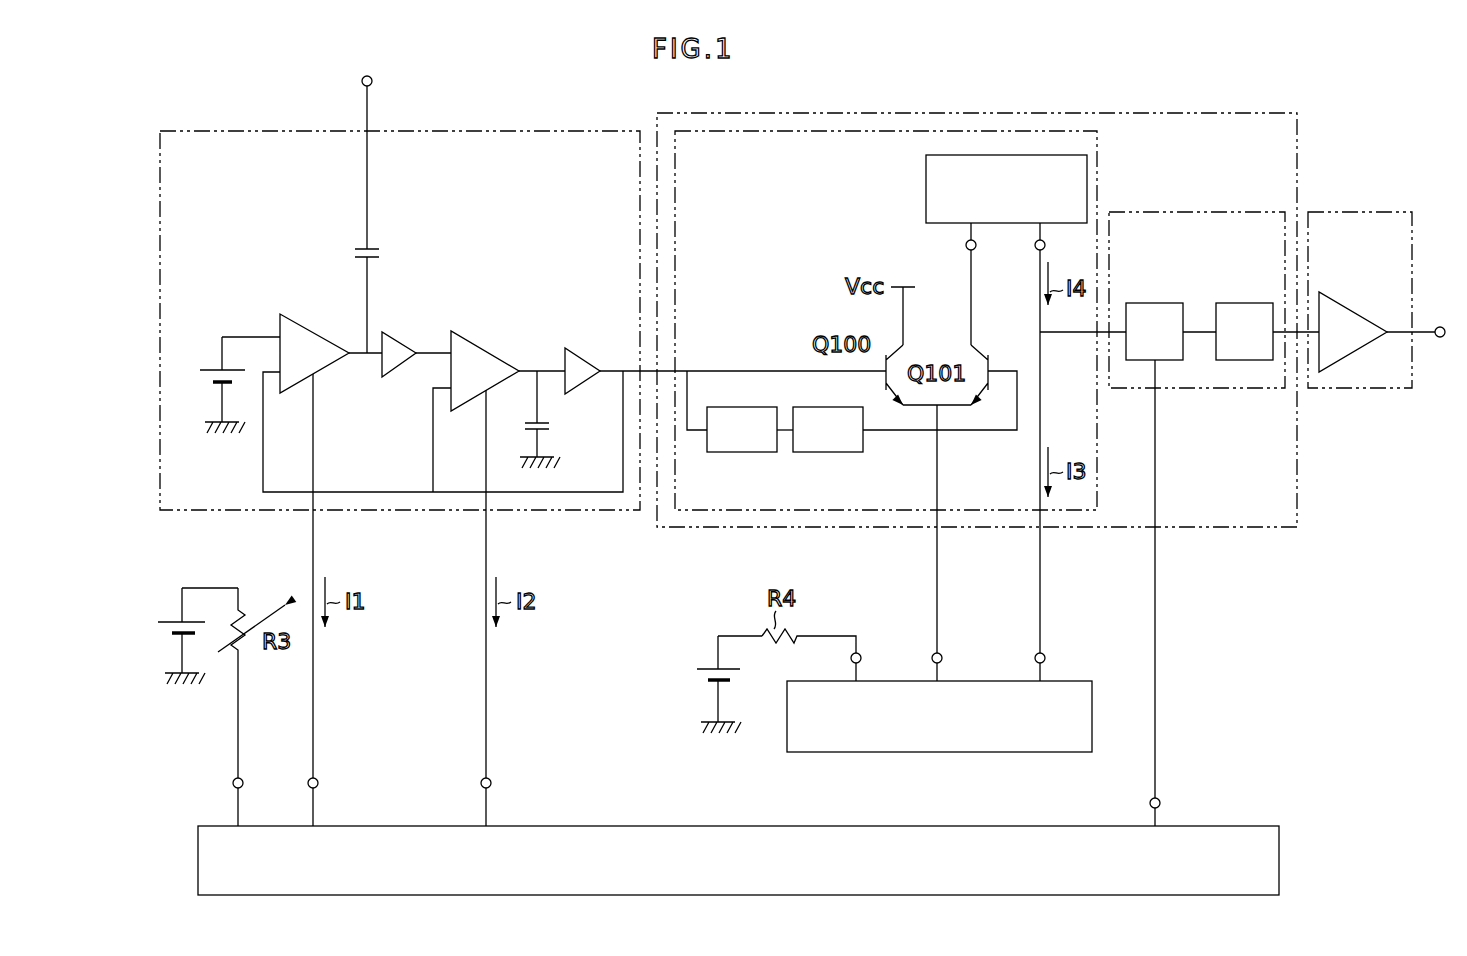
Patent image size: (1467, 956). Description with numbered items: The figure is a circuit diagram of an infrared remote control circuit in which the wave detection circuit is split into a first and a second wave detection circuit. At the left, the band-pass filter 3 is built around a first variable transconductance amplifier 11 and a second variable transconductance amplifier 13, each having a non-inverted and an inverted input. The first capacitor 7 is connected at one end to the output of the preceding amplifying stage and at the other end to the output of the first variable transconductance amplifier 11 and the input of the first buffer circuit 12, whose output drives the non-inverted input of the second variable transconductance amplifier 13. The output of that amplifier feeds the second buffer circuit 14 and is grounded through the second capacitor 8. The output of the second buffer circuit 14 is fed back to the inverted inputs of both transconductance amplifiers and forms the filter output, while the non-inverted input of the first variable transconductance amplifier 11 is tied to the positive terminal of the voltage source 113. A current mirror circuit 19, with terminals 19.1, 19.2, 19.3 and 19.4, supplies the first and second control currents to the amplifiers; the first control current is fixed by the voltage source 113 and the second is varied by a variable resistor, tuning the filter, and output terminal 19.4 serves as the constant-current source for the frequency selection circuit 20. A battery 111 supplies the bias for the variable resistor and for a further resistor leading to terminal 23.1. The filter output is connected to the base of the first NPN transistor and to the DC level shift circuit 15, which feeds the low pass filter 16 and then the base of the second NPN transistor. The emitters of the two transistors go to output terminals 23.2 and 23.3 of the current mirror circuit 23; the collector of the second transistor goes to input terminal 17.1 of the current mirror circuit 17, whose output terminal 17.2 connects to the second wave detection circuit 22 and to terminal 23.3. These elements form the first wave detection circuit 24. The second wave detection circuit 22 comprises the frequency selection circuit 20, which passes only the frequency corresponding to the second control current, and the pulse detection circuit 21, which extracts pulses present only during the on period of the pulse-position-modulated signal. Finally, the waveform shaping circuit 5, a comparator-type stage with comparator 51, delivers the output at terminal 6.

The BPF 3 is at (481, 131).
The waveform shaping circuit 5 is at (1360, 212).
The output terminal 6 is at (1440, 327).
The first capacitor 7 is at (355, 253).
The second capacitor 8 is at (549, 429).
The first variable transconductance amplifier 11 is at (280, 318).
The first buffer circuit 12 is at (396, 346).
The second variable transconductance amplifier 13 is at (475, 347).
The second buffer circuit 14 is at (581, 360).
The DC level shift circuit 15 is at (741, 454).
The low pass filter 16 is at (827, 454).
The current mirror circuit 17 is at (926, 186).
The input terminal of the current mirror circuit 17 17.1 is at (944, 284).
The output terminal of the current mirror circuit 17 17.2 is at (1014, 438).
The current mirror circuit 19 is at (1233, 826).
The control unit terminal 19.1 is at (213, 798).
The control unit terminal 19.2 is at (341, 798).
The control unit terminal 19.3 is at (514, 798).
The output terminal of the current mirror circuit 19 19.4 is at (1183, 808).
The frequency selection circuit 20 is at (1157, 303).
The pulse detection circuit 21 is at (1247, 303).
The second wave detection circuit 22 is at (1178, 113).
The current mirror circuit 23 is at (923, 752).
The control block terminal 23.1 is at (881, 657).
The output terminal of the current mirror circuit 23 23.2 is at (963, 657).
The output terminal of the current mirror circuit 23 23.3 is at (1065, 657).
The first wave detection circuit 24 is at (970, 131).
The comparator 51 is at (1356, 310).
The voltage source 111 is at (434, 660).
The voltage source 113 is at (209, 384).